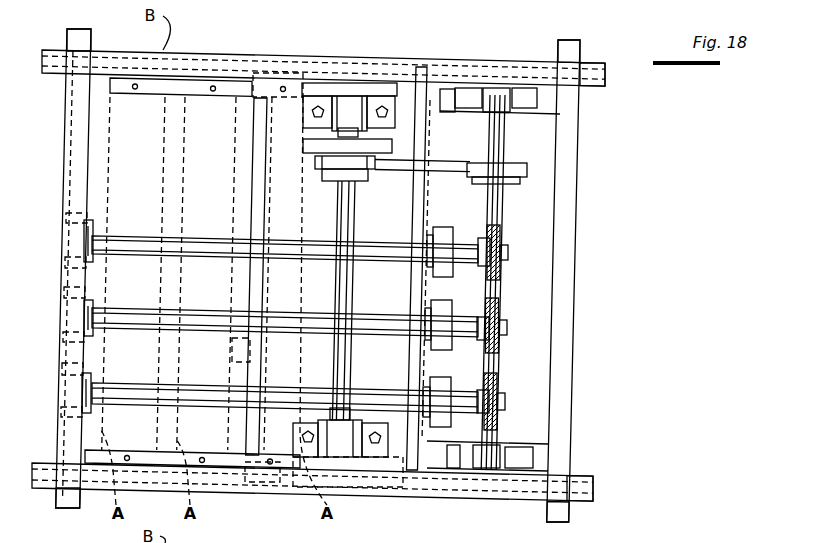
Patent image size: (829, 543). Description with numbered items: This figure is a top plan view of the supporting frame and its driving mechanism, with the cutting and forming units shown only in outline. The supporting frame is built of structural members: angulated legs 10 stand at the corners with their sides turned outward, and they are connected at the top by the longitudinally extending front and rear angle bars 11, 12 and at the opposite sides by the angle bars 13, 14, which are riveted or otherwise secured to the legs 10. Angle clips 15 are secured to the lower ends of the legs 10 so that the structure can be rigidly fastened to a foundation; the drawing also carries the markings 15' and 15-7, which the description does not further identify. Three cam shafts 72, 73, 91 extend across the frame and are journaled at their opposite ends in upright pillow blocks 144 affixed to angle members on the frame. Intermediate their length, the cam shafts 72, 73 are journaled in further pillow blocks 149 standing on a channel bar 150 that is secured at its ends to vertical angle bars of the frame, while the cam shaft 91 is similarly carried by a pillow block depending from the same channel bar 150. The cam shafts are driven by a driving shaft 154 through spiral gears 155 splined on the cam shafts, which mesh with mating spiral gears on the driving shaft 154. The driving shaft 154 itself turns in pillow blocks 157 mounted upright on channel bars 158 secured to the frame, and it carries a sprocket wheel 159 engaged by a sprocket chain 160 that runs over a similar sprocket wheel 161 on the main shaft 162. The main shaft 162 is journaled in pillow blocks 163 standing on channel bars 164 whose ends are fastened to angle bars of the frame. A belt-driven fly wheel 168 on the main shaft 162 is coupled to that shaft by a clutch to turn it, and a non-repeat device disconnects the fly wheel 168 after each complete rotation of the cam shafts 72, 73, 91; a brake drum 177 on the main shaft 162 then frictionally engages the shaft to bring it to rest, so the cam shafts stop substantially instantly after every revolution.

The angulated legs 10 is at (80, 47).
The front angle bar 11 is at (218, 483).
The rear angle bar 12 is at (217, 58).
The side angle bar 13 is at (60, 323).
The side angle bar 14 is at (567, 328).
The angle clips 15 is at (596, 277).
The bracket section 15' is at (284, 50).
The bracket block 15-7 is at (530, 98).
The cam shaft 72 is at (152, 243).
The cam shaft 73 is at (157, 397).
The cam shaft 91 is at (157, 325).
The pillow blocks 144 is at (90, 300).
The pillow blocks 149 is at (253, 233).
The channel bar 150 is at (260, 153).
The driving shaft 154 is at (492, 215).
The spiral gears 155 is at (497, 277).
The pillow blocks 157 is at (518, 458).
The channel bars 158 is at (548, 117).
The sprocket wheel 159 is at (528, 170).
The sprocket chain 160 is at (397, 168).
The sprocket wheel 161 is at (320, 168).
The main shaft 162 is at (337, 283).
The pillow blocks 163 is at (310, 97).
The channel bars 164 is at (213, 94).
The fly wheel 168 is at (235, 350).
The brake drum 177 is at (393, 147).